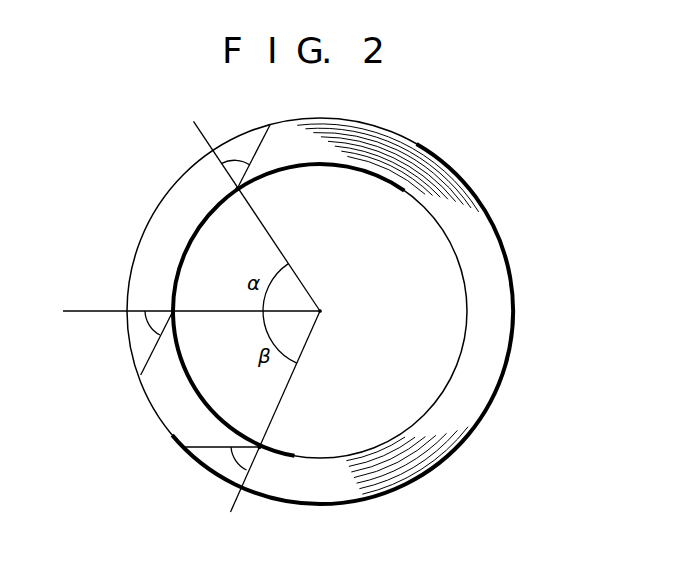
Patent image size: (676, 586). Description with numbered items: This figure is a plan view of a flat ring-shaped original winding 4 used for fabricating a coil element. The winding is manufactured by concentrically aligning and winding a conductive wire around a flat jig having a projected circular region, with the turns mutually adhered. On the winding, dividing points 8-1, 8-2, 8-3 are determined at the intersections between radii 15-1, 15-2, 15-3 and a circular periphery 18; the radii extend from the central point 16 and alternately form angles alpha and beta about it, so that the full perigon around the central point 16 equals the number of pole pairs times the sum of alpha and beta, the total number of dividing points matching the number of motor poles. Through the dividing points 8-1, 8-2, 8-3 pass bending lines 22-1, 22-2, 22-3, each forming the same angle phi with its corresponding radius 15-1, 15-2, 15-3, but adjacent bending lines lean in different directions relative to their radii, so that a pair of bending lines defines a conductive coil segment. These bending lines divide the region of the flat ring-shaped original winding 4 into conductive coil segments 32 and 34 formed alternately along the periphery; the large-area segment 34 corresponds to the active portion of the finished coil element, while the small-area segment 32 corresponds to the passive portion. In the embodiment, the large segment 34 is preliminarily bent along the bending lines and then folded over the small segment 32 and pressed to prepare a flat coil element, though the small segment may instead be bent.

The flat ring-shaped original winding 4 is at (460, 170).
The conductive coil segment 34 is at (150, 240).
The conductive coil segment 32 is at (158, 398).
The circular periphery 18 is at (424, 206).
The central point 16 is at (322, 311).
The dividing point 8-1 is at (239, 190).
The dividing point 8-2 is at (175, 309).
The dividing point 8-3 is at (261, 447).
The radius 15-1 is at (273, 240).
The radius 15-2 is at (224, 313).
The radius 15-3 is at (291, 378).
The bending line 22-1 is at (263, 138).
The bending line 22-2 is at (147, 355).
The bending line 22-3 is at (185, 450).